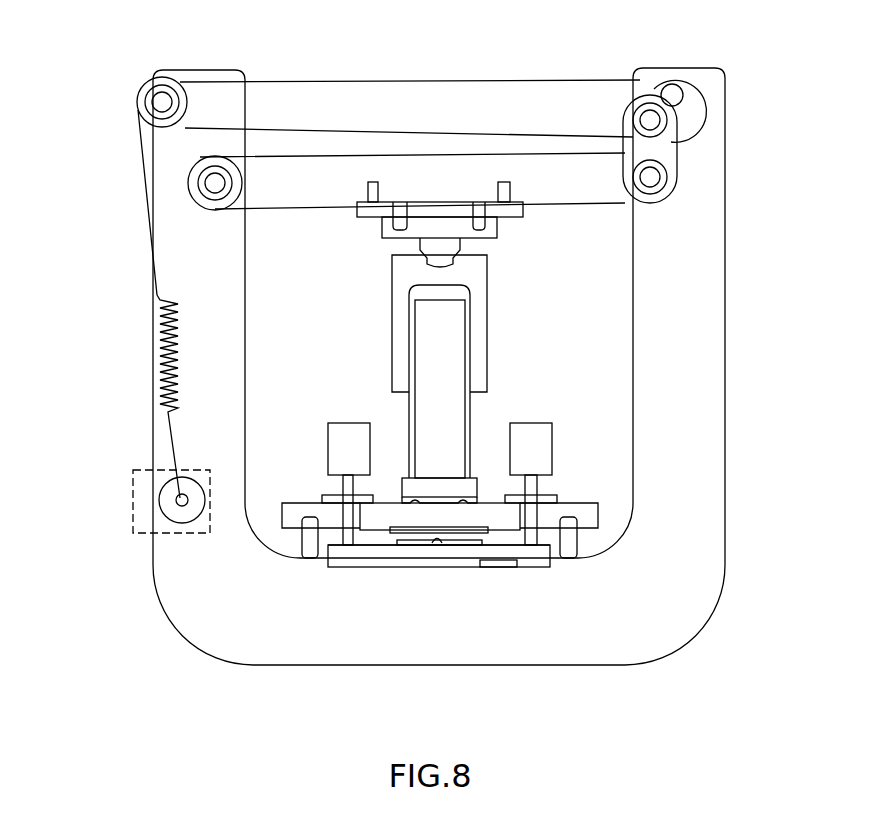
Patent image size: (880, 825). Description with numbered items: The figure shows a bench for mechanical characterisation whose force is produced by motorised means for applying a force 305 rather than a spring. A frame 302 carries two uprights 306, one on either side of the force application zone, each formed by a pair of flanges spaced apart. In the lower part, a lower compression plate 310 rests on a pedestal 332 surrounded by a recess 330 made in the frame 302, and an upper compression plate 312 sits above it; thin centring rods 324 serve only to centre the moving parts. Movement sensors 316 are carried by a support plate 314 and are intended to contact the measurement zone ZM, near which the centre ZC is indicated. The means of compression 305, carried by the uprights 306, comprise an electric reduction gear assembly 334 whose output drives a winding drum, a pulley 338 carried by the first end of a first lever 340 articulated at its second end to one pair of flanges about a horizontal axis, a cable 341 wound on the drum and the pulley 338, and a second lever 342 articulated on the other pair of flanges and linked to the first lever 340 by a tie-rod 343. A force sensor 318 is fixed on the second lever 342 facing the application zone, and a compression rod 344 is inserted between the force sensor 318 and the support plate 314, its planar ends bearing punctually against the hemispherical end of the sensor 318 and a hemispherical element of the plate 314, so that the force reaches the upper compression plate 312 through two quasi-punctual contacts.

The frame 302 is at (450, 366).
The means for applying a force 305 is at (407, 281).
The uprights 306 is at (175, 272).
The lower compression plate 310 is at (600, 557).
The upper compression plate 312 is at (395, 532).
The support plate 314 is at (600, 518).
The movement sensors 316 is at (345, 403).
The force sensor 318 is at (497, 238).
The centring rods 324 is at (310, 540).
The recess 330 is at (517, 562).
The pedestal 332 is at (420, 565).
The electric reduction gear assembly 334 is at (143, 520).
The pulley 338 is at (152, 82).
The first lever 340 is at (383, 87).
The cable 341 is at (145, 223).
The second lever 342 is at (287, 163).
The tie-rod 343 is at (662, 147).
The compression rod 344 is at (366, 302).
The measurement zone ZM is at (542, 543).
The Z center ZC is at (437, 538).